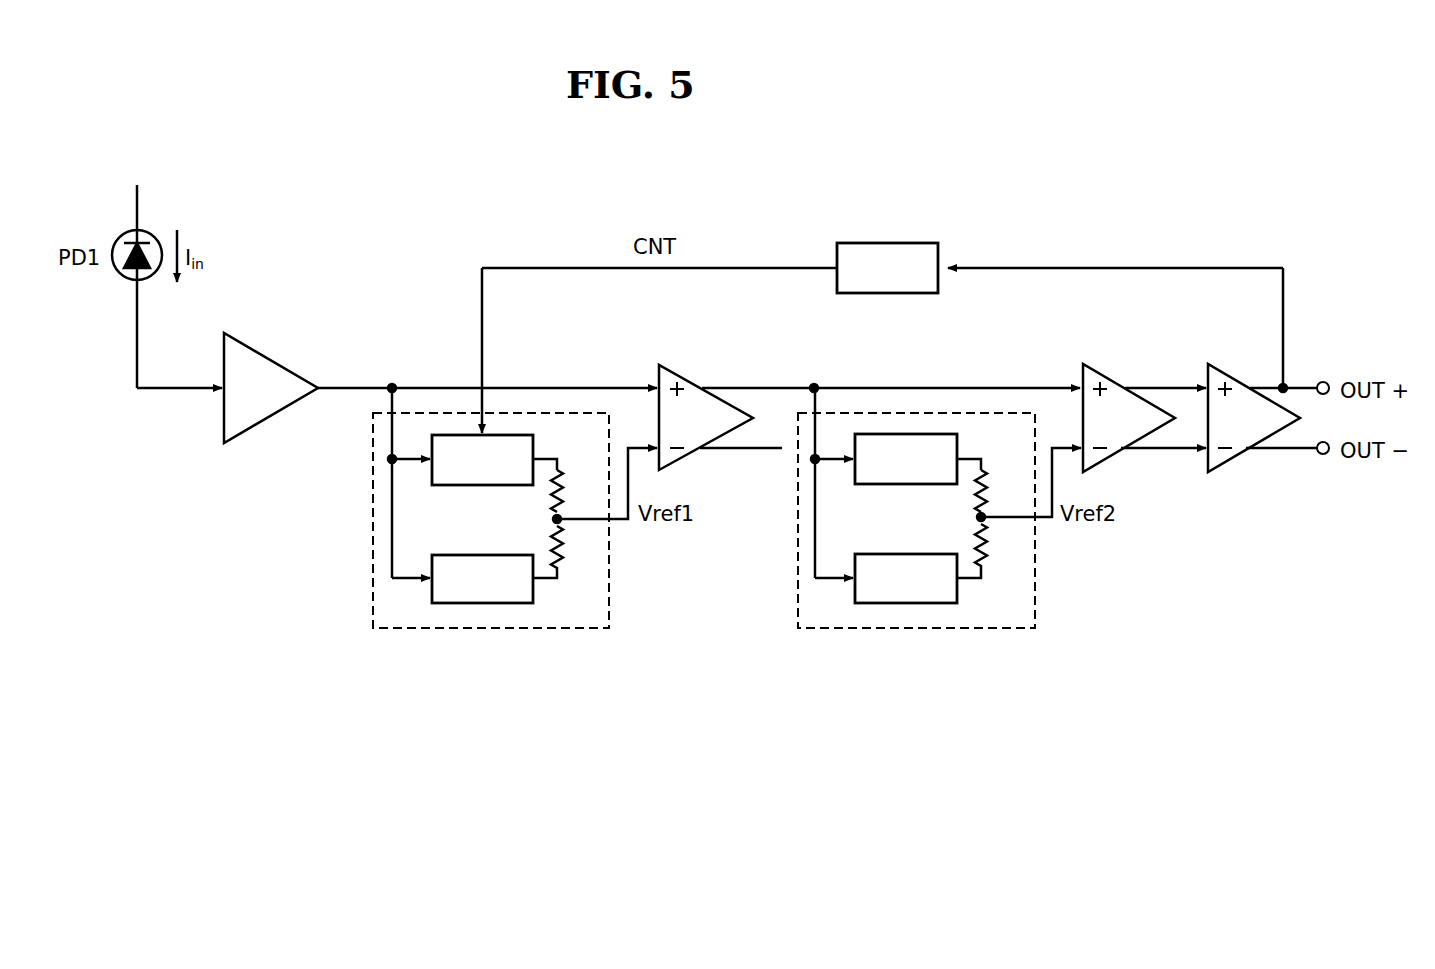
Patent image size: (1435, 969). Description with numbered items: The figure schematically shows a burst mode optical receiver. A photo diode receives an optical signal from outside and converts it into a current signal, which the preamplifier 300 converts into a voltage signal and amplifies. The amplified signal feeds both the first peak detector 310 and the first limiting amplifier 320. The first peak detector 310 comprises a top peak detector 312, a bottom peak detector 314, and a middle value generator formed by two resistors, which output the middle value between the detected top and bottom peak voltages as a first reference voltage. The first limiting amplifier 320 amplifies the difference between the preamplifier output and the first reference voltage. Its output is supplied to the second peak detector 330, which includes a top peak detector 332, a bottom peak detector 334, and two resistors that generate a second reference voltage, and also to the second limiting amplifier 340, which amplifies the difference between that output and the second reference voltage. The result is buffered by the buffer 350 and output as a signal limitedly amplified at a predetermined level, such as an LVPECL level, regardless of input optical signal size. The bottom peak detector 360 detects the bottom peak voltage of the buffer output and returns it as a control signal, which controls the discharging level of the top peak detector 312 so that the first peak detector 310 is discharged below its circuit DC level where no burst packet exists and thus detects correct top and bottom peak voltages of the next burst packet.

The preamplifier 300 is at (258, 351).
The first peak detector 310 is at (515, 541).
The top peak detector 312 is at (450, 486).
The bottom peak detector 314 is at (506, 554).
The first limiting amplifier 320 is at (693, 380).
The second peak detector 330 is at (939, 541).
The top peak detector 332 is at (873, 485).
The bottom peak detector 334 is at (929, 554).
The second limiting amplifier 340 is at (1118, 380).
The buffer 350 is at (1243, 380).
The bottom peak detector 360 is at (902, 243).